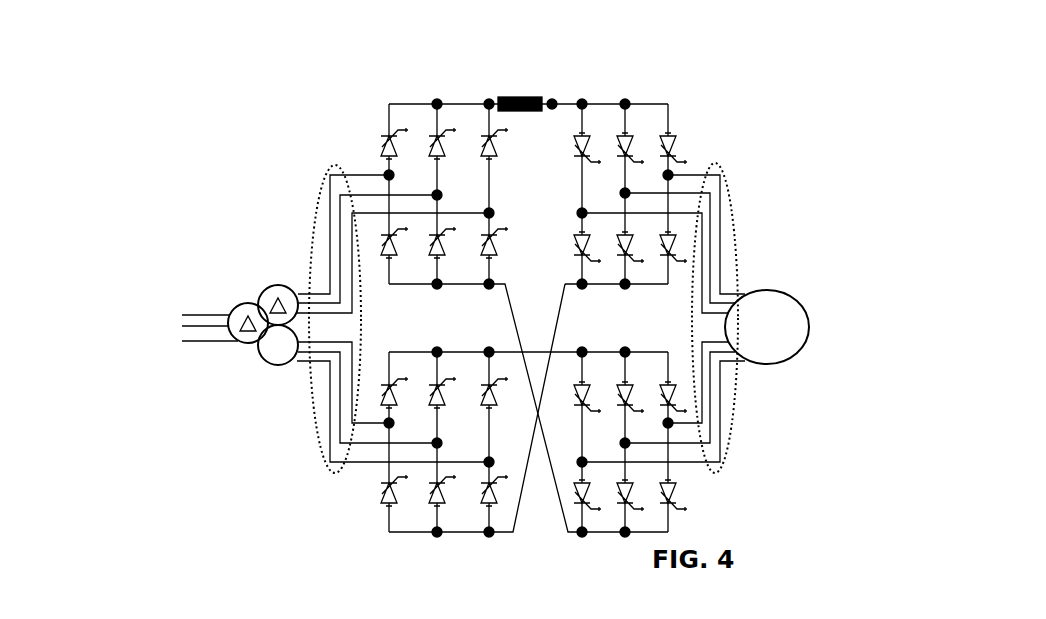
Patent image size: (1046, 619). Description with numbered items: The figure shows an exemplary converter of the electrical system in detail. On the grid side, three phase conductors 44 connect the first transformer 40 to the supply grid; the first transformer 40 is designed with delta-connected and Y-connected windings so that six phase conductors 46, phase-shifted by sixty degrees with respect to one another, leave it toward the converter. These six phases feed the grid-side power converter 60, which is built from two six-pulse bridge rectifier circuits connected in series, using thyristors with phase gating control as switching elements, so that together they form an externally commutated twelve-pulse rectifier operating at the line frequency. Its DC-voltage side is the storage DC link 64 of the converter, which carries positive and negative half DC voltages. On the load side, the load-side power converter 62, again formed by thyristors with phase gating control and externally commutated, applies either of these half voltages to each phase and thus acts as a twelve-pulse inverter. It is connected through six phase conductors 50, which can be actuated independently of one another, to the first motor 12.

The first motor 12 is at (788, 294).
The first transformer 40 is at (252, 296).
The phase conductors 44 is at (180, 305).
The phase conductors 46 is at (307, 205).
The phase conductors 50 is at (797, 163).
The grid-side power converter 60 is at (383, 94).
The load-side power converter 62 is at (609, 83).
The storage DC link 64 is at (540, 76).